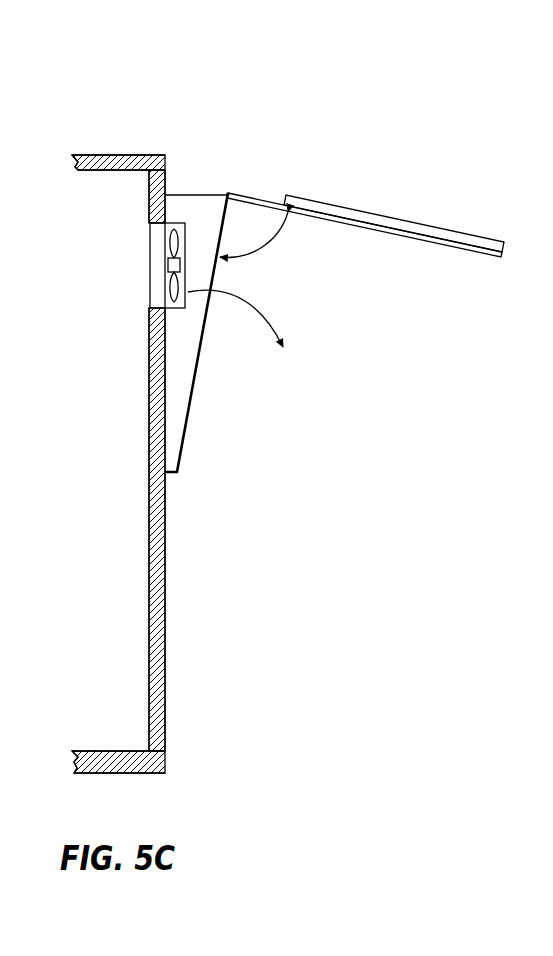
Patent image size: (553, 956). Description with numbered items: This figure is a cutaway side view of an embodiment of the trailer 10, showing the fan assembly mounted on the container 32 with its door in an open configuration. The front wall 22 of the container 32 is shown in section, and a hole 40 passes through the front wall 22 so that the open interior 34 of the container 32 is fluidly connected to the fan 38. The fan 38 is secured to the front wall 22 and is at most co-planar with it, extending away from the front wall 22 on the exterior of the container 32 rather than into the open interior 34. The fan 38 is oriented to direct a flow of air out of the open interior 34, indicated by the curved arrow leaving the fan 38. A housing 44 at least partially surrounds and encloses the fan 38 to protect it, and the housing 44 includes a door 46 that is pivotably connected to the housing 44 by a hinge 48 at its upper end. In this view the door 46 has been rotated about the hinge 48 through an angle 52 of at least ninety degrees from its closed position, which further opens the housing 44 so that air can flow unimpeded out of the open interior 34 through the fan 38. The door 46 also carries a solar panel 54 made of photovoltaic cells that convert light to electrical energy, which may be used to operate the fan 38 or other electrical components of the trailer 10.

The trailer 10 is at (309, 518).
The front wall 22 is at (165, 573).
The container 32 is at (116, 162).
The open interior 34 is at (99, 548).
The fan 38 is at (187, 228).
The hole 40 is at (150, 272).
The housing 44 is at (211, 207).
The door 46 is at (432, 237).
The hinge 48 is at (229, 193).
The angle 52 is at (260, 249).
The solar panel 54 is at (338, 204).